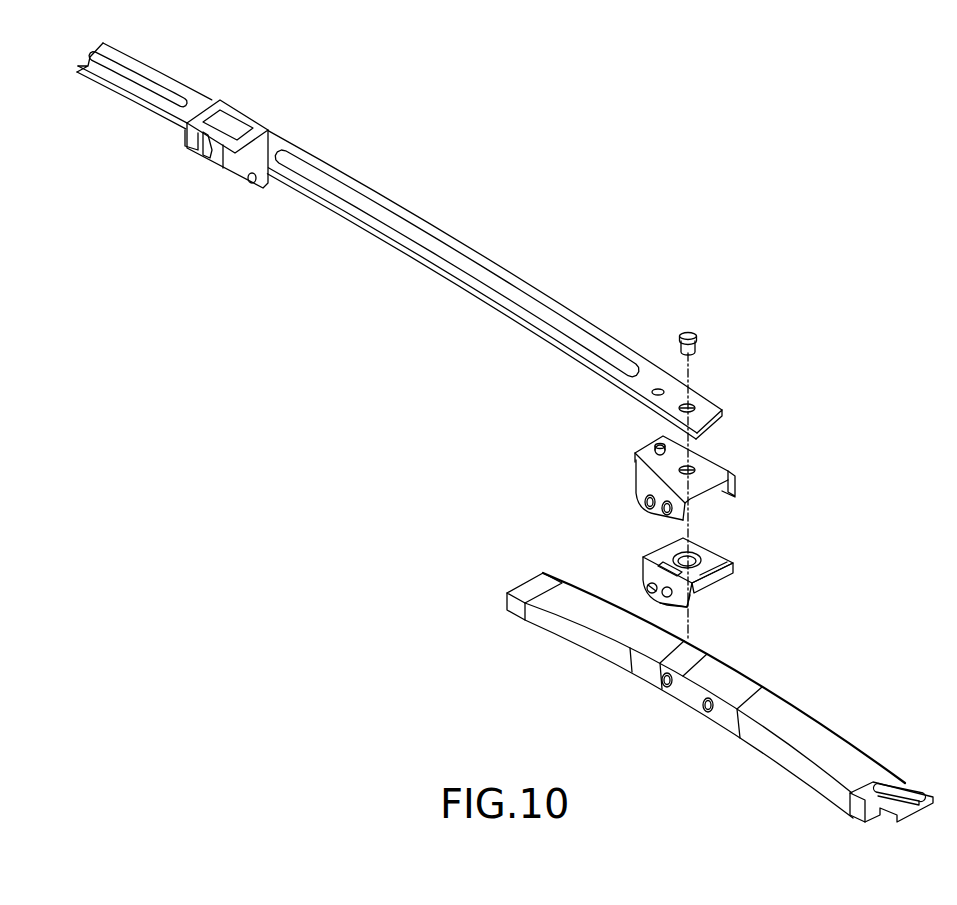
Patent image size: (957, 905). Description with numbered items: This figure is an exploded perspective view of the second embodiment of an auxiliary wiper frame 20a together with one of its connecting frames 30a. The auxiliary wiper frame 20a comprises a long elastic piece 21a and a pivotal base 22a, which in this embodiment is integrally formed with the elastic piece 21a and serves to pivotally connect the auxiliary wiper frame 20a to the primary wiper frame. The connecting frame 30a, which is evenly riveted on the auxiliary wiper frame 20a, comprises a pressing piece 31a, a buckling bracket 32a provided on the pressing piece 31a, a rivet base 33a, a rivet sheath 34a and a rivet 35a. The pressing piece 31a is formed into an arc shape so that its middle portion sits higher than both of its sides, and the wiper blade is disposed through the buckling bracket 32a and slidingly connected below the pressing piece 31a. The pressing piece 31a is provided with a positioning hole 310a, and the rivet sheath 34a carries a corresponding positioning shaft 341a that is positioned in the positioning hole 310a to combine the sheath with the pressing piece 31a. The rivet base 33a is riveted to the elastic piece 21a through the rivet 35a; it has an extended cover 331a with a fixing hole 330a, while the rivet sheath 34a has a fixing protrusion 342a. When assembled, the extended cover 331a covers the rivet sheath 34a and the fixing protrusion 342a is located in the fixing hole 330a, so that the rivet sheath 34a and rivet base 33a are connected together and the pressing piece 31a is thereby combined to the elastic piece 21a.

The auxiliary wiper frame 20a is at (455, 208).
The elastic piece 21a is at (508, 277).
The pivotal base 22a is at (270, 140).
The rivet 35a is at (686, 329).
The rivet base 33a is at (713, 463).
The extended cover 331a is at (637, 487).
The fixing hole 330a is at (640, 505).
The rivet sheath 34a is at (717, 557).
The fixing protrusion 342a is at (650, 583).
The positioning shaft 341a is at (688, 602).
The connecting frame 30a is at (822, 697).
The pressing piece 31a is at (835, 753).
The positioning hole 310a is at (663, 680).
The buckling bracket 32a is at (853, 817).